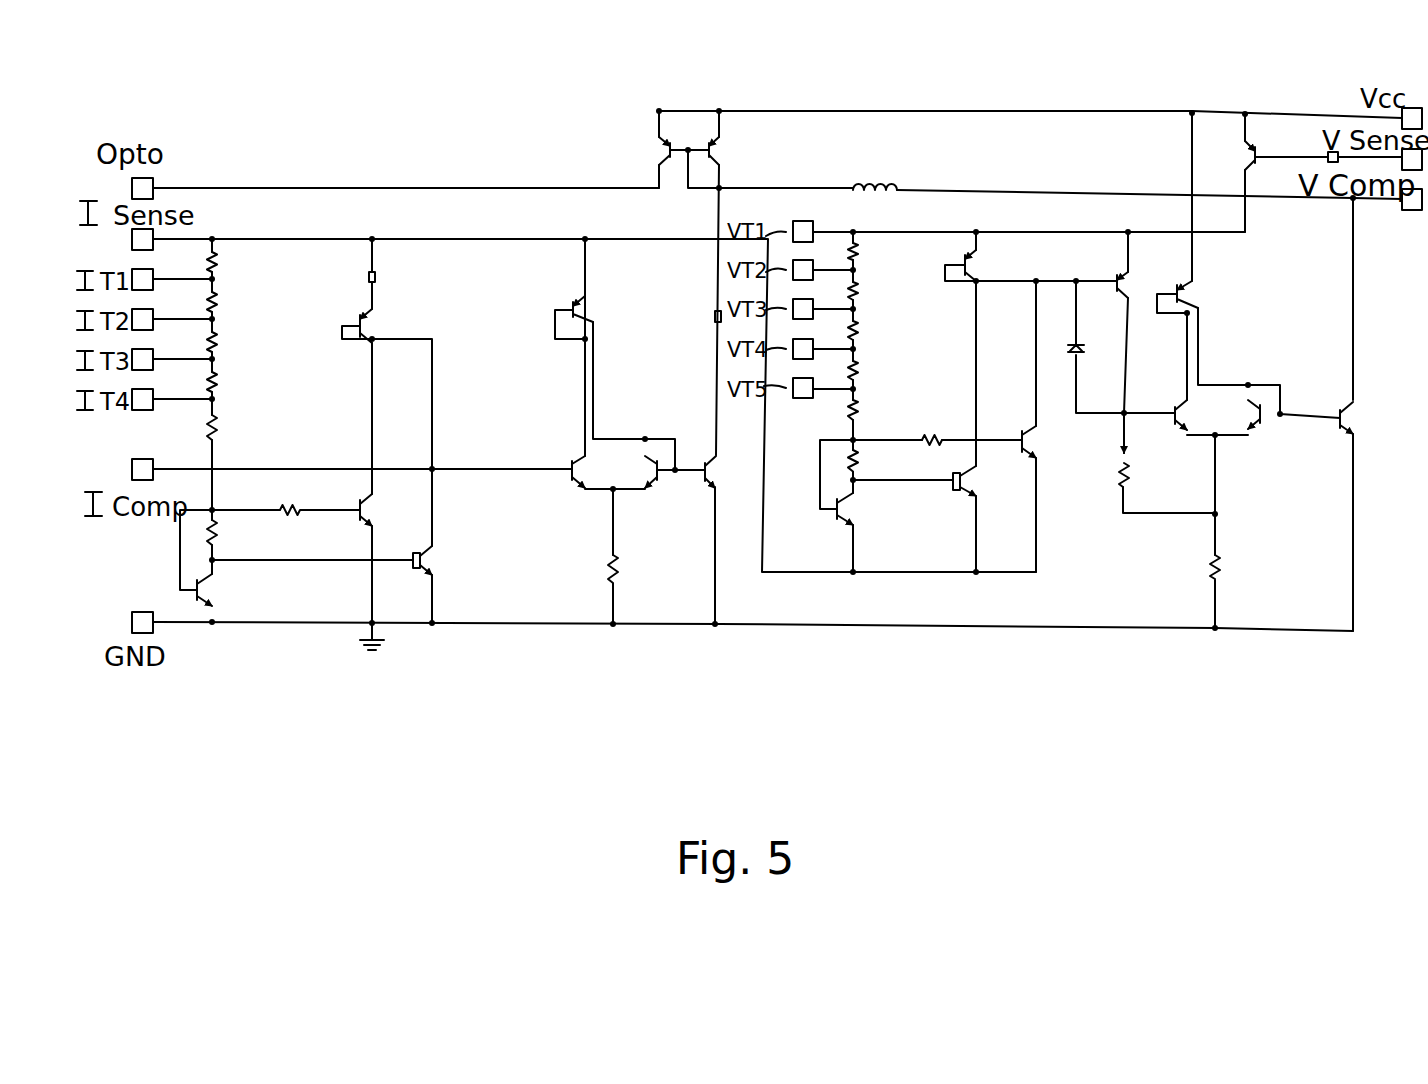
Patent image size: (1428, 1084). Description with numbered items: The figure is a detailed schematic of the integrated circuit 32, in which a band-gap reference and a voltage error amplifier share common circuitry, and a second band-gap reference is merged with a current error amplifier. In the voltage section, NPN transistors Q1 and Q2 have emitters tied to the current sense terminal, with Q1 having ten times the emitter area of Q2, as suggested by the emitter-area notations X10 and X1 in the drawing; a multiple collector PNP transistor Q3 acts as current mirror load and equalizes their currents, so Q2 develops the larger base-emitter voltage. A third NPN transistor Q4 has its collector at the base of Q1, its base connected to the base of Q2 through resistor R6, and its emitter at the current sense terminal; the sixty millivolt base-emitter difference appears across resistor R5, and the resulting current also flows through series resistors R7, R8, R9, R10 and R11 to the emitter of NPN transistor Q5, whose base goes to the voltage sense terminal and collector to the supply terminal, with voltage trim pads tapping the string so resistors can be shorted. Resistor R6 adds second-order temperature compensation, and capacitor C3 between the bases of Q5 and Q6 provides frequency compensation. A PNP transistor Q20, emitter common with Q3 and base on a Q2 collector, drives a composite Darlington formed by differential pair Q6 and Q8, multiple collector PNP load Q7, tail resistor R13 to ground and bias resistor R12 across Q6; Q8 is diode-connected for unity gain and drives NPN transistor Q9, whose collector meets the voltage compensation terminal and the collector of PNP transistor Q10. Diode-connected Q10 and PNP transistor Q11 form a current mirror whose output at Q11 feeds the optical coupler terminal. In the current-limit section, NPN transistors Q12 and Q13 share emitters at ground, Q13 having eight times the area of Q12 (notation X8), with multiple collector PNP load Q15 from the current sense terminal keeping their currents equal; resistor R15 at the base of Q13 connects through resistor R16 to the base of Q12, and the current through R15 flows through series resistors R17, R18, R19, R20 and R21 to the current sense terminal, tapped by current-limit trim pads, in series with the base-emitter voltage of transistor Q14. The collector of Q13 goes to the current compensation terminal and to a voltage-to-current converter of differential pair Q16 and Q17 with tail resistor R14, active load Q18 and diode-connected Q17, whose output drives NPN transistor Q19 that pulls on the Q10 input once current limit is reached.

The integrated circuit 32 is at (508, 128).
The resistor R21 is at (218, 262).
The resistor R20 is at (218, 302).
The resistor R19 is at (218, 342).
The resistor R18 is at (218, 382).
The resistor R17 is at (218, 425).
The resistor R16 is at (286, 498).
The resistor R15 is at (218, 530).
The resistor R14 is at (880, 172).
The resistor R13 is at (1204, 554).
The resistor R12 is at (1116, 475).
The resistor R11 is at (860, 252).
The resistor R10 is at (860, 290).
The resistor R9 is at (862, 328).
The resistor R8 is at (864, 357).
The resistor R7 is at (862, 402).
The resistor R6 is at (930, 430).
The resistor R5 is at (860, 460).
The capacitor C3 is at (1090, 350).
The NPN transistor Q1 is at (970, 455).
The NPN transistor Q2 is at (1040, 442).
The multiple collector PNP transistor Q3 is at (978, 260).
The NPN transistor Q4 is at (845, 508).
The NPN transistor Q5 is at (1256, 142).
The NPN transistor Q6 is at (1176, 431).
The multiple collector PNP transistor Q7 is at (1204, 290).
The NPN transistor Q8 is at (1262, 432).
The NPN transistor Q9 is at (1360, 424).
The PNP transistor Q10 is at (725, 150).
The PNP transistor Q11 is at (660, 152).
The NPN transistor Q12 is at (343, 524).
The NPN transistor Q13 is at (440, 556).
The transistor Q14 is at (235, 593).
The multiple collector PNP load transistor Q15 is at (380, 318).
The NPN transistor Q16 is at (570, 492).
The NPN transistor Q17 is at (660, 492).
The multiple collector PNP transistor Q18 is at (598, 308).
The NPN transistor Q19 is at (720, 470).
The PNP transistor Q20 is at (1130, 276).
The transistor area multiplier X1 is at (701, 492).
The transistor area multiplier X8 is at (402, 585).
The transistor area multiplier X10 is at (946, 512).